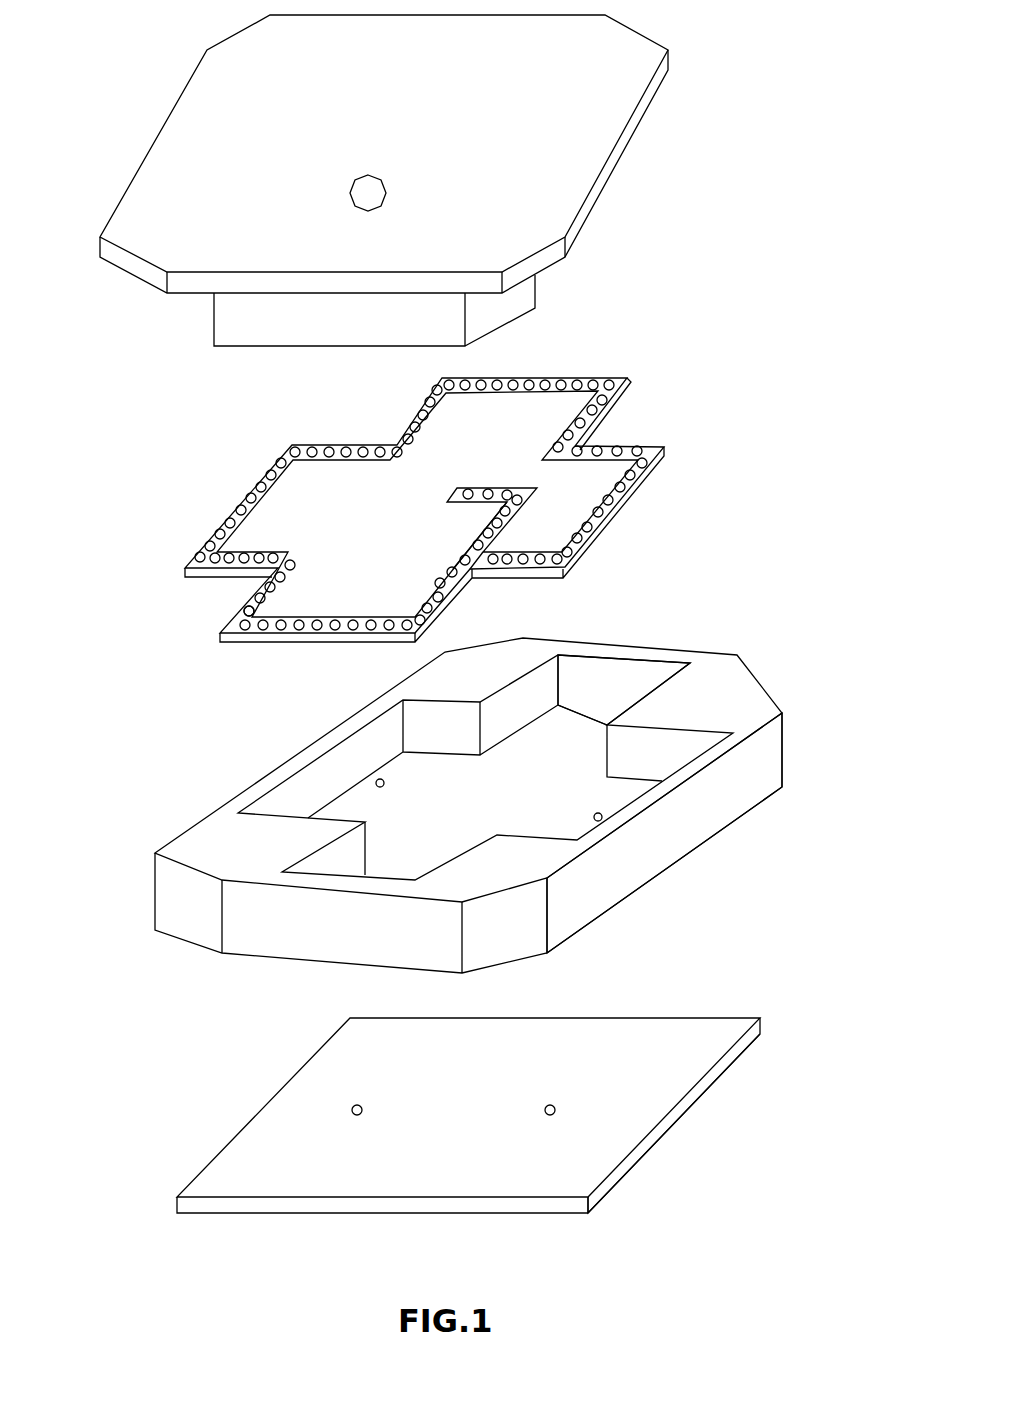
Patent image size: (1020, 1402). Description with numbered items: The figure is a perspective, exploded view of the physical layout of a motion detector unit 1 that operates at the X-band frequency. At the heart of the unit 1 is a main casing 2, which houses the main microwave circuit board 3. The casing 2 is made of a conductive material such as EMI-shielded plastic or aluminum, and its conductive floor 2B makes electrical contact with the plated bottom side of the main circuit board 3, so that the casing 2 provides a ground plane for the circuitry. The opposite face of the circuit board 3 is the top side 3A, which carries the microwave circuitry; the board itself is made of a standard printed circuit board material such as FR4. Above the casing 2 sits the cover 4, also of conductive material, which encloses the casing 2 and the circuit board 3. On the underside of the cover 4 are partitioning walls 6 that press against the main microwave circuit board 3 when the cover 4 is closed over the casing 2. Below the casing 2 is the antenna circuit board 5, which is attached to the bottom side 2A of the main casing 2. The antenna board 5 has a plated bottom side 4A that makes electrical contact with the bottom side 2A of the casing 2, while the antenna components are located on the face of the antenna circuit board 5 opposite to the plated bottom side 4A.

The motion detector unit 1 is at (758, 381).
The main casing 2 is at (165, 893).
The bottom side of the main casing 2A is at (662, 892).
The floor of the casing 2B is at (583, 730).
The main microwave circuit board 3 is at (600, 503).
The top side of the main circuit board 3A is at (262, 600).
The cover 4 is at (612, 158).
The plated bottom side of the antenna board 4A is at (690, 1058).
The antenna circuit board 5 is at (600, 1192).
The partitioning walls 6 is at (232, 318).